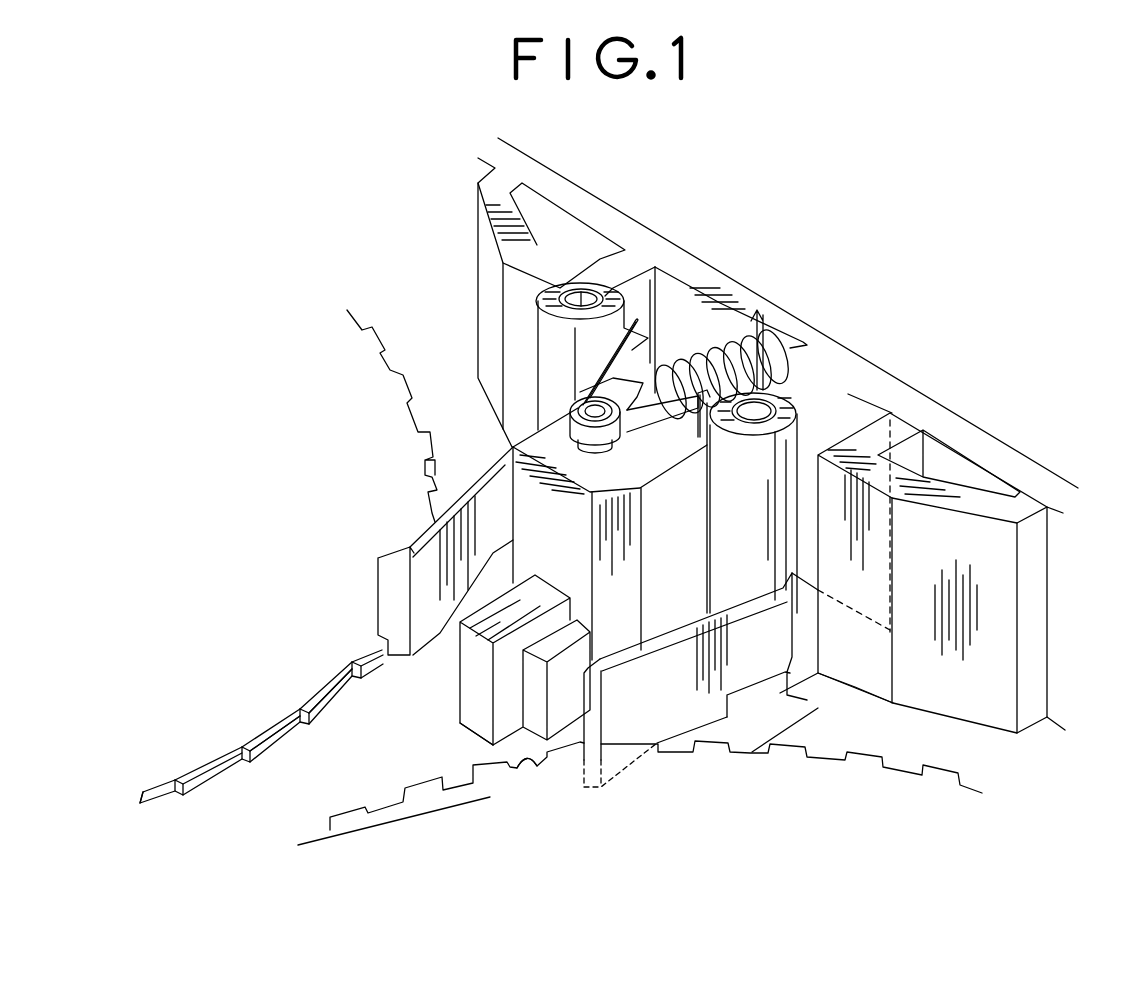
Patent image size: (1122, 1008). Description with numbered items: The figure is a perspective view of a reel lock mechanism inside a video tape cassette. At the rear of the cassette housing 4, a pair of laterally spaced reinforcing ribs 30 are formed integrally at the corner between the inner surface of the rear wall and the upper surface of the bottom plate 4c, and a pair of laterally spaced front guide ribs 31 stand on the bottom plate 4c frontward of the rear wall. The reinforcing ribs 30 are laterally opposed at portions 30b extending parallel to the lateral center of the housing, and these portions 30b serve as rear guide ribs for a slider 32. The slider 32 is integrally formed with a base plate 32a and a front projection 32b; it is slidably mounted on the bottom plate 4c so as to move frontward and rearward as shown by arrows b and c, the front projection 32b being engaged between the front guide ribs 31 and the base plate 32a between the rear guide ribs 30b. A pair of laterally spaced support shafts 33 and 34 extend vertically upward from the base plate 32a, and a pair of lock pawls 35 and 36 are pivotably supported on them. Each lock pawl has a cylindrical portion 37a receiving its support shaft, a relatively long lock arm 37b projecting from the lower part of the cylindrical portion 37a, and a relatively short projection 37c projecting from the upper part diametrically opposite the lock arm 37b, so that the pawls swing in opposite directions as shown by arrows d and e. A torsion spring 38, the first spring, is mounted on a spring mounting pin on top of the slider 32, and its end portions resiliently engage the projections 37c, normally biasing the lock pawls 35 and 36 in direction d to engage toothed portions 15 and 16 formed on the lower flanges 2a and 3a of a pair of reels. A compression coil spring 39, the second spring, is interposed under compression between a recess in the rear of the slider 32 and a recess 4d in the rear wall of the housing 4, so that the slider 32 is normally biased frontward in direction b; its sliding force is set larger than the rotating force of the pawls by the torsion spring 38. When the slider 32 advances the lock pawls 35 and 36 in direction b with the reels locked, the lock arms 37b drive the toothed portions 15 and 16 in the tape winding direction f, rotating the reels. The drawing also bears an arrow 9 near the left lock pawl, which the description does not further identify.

The lower flange 2a is at (400, 815).
The lower flange 3a is at (202, 752).
The cassette housing 4 is at (698, 276).
The bottom plate 4c is at (400, 703).
The recess 4d is at (787, 323).
The carrier direction 9 is at (349, 519).
The toothed portion 15 is at (527, 767).
The toothed portion 16 is at (282, 720).
The reinforcing ribs 30 is at (485, 233).
The rear guide ribs 30b is at (627, 263).
The front guide ribs 31 is at (555, 648).
The slider 32 is at (540, 428).
The base plate 32a is at (800, 682).
The front projection 32b is at (473, 720).
The support shaft 33 is at (790, 392).
The support shaft 34 is at (582, 298).
The lock pawl 35 is at (705, 699).
The lock pawl 36 is at (456, 473).
The cylindrical portion 37a is at (557, 284).
The lock arm 37b is at (388, 550).
The projection 37c is at (587, 360).
The torsion spring 38 is at (647, 437).
The compression coil spring 39 is at (753, 300).
The arrow b is at (343, 768).
The arrow c is at (348, 741).
The arrow d is at (312, 605).
The arrow e is at (345, 577).
The arrow f is at (226, 720).